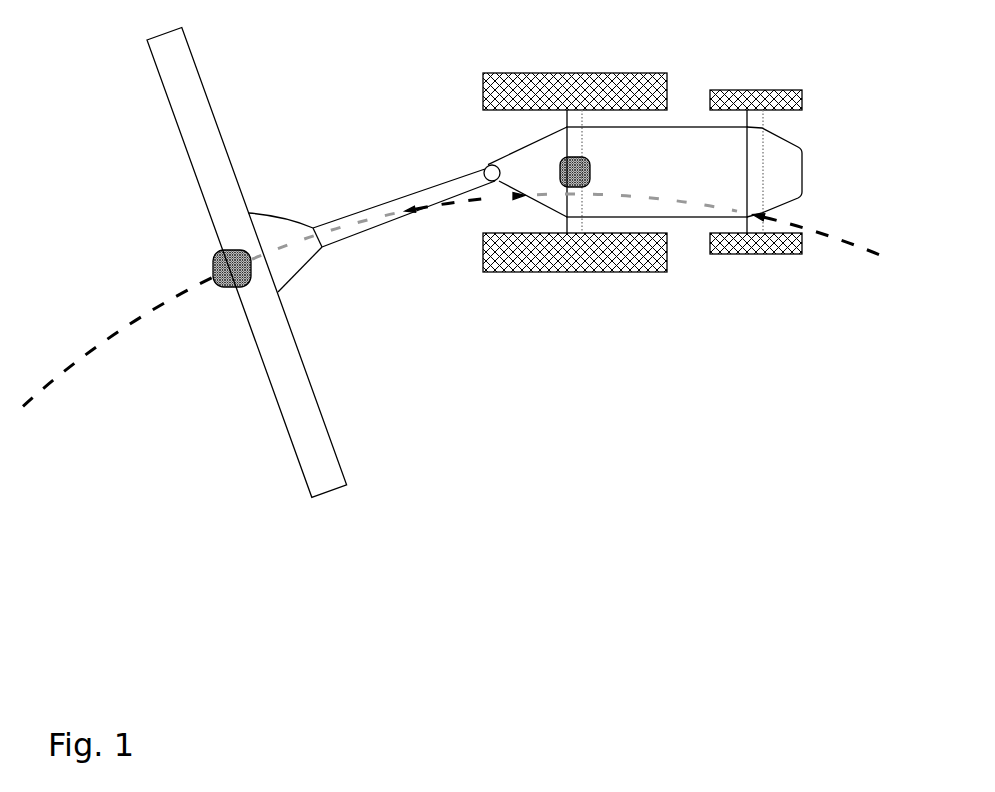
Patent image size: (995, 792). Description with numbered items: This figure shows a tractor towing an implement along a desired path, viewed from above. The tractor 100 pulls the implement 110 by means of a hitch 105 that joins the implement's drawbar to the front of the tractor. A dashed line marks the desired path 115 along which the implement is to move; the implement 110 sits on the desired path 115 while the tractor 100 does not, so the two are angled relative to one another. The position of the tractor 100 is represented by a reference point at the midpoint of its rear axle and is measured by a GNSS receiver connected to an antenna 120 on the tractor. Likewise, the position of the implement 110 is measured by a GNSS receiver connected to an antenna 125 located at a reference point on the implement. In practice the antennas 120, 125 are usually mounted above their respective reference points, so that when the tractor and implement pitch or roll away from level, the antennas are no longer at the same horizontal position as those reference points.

The tractor 100 is at (717, 186).
The hitch 105 is at (490, 191).
The implement 110 is at (277, 360).
The desired path 115 is at (75, 378).
The antenna 120 is at (590, 160).
The antenna 125 is at (213, 263).